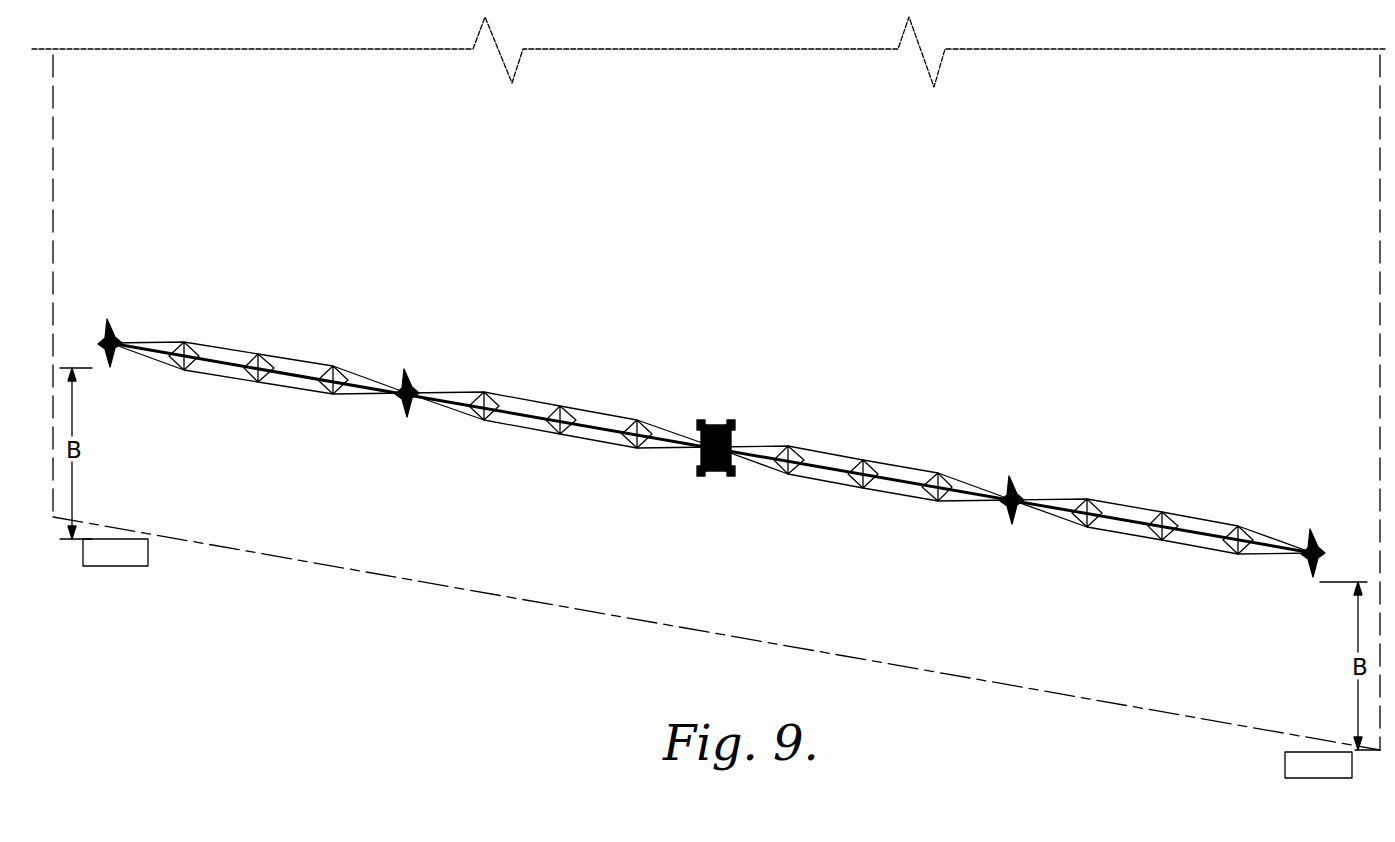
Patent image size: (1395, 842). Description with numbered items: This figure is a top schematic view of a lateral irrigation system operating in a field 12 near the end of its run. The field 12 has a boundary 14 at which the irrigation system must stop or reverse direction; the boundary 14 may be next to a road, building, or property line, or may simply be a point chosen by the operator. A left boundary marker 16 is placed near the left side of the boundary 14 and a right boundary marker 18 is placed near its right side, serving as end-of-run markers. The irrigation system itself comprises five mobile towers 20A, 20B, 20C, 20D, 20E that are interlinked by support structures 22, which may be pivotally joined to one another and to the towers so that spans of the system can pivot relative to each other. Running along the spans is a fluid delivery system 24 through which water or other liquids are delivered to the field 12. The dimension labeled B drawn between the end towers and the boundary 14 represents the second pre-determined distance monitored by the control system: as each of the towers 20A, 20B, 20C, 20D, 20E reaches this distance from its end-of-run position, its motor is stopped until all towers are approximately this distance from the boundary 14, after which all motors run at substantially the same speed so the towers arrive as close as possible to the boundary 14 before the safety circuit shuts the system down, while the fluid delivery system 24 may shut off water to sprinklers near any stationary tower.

The field 12 is at (796, 212).
The boundary 14 is at (590, 610).
The left boundary marker 16 is at (117, 558).
The right boundary marker 18 is at (1305, 765).
The mobile tower 20A is at (112, 305).
The mobile tower 20B is at (410, 352).
The mobile tower 20C is at (705, 403).
The mobile tower 20D is at (1017, 460).
The mobile tower 20E is at (1318, 520).
The support structures 22 is at (259, 353).
The fluid delivery system 24 is at (230, 363).